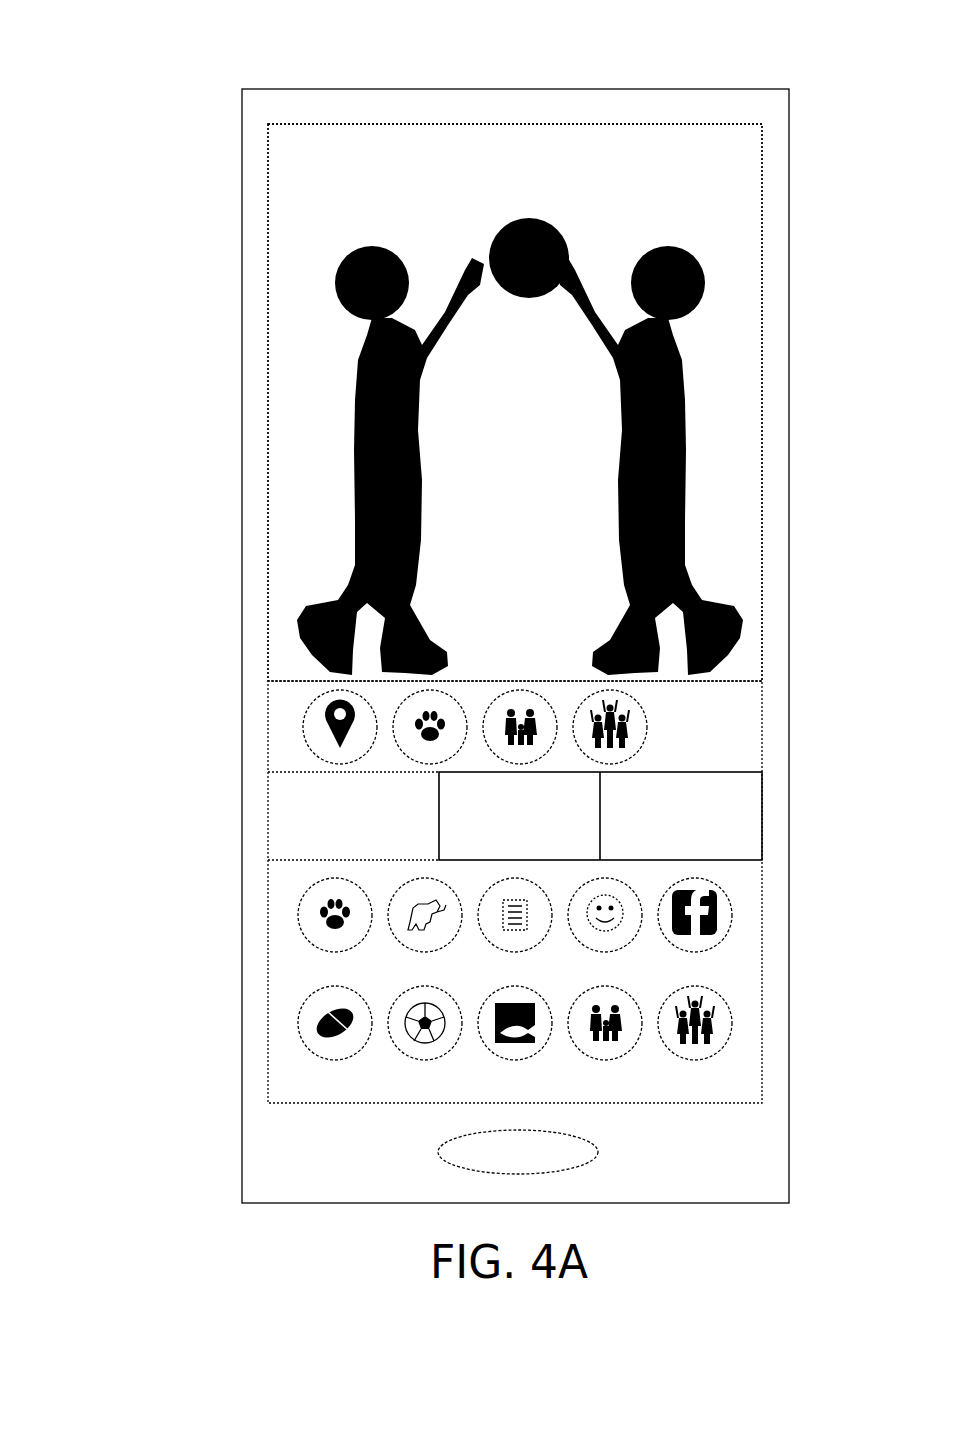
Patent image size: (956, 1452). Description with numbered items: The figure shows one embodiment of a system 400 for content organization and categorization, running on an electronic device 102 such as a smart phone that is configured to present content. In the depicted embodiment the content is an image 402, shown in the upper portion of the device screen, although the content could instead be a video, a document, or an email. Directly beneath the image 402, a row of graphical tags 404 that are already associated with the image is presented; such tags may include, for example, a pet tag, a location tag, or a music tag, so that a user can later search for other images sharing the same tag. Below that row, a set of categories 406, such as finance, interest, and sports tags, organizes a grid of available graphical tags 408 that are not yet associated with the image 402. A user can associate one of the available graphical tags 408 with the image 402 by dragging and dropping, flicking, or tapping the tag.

The user interface 400 is at (187, 69).
The electronic device 102 is at (242, 268).
The image 402 is at (296, 412).
The graphical tags 404 is at (296, 735).
The categories 406 is at (296, 825).
The available graphical tags 408 is at (296, 897).